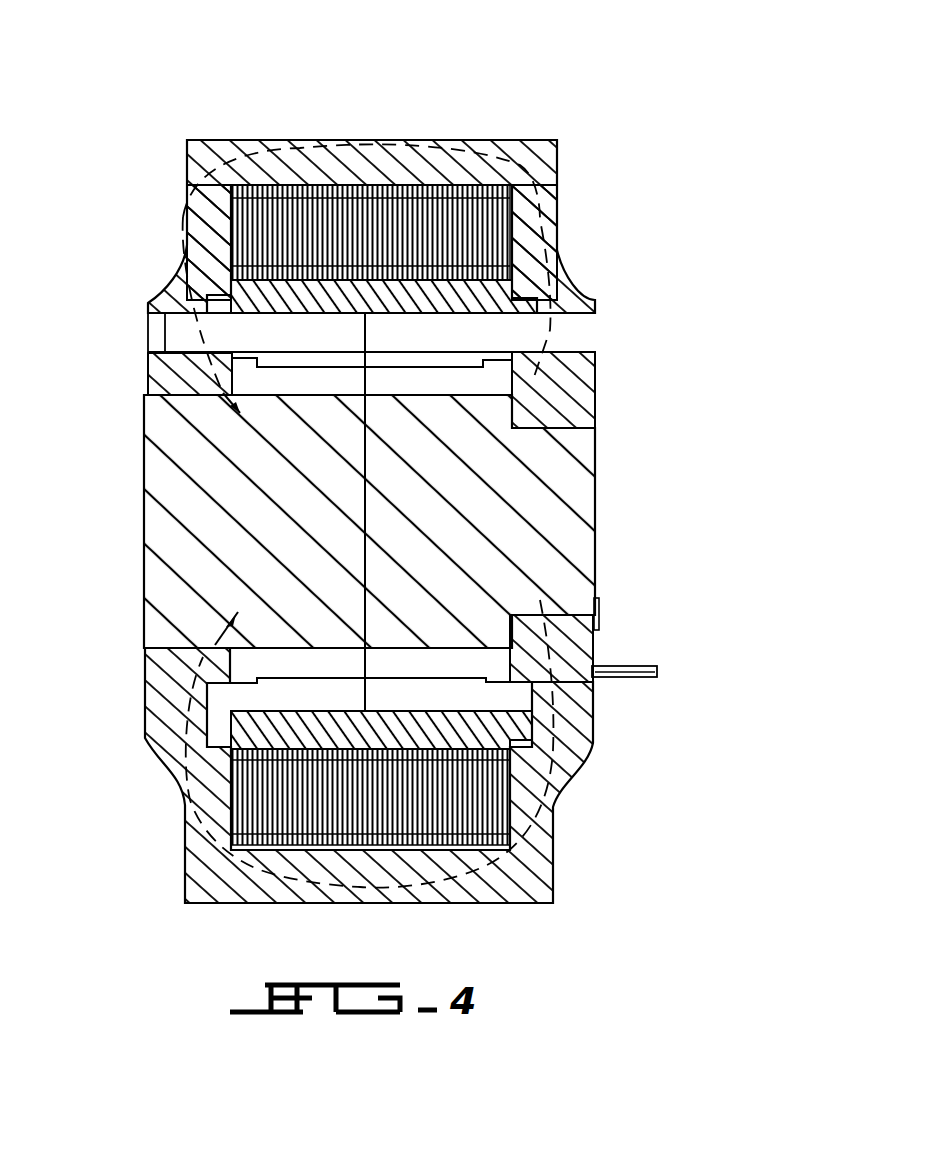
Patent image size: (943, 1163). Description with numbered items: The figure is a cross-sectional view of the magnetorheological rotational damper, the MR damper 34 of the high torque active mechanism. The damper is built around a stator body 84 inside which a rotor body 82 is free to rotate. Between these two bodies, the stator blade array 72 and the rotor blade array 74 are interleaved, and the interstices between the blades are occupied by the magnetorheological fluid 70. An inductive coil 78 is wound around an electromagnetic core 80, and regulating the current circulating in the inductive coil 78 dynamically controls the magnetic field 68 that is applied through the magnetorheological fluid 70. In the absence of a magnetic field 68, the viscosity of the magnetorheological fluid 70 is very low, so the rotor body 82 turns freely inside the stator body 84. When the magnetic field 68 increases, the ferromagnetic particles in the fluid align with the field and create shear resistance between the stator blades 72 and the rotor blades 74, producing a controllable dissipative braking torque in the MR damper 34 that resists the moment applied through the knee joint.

The MR damper 34 is at (596, 93).
The magnetic field 68 is at (557, 727).
The magnetorheological fluid 70 is at (483, 237).
The stator blade array 72 is at (513, 183).
The rotor blade array 74 is at (227, 245).
The inductive coil 78 is at (462, 685).
The electromagnetic core 80 is at (198, 528).
The rotor body 82 is at (218, 338).
The stator body 84 is at (210, 163).